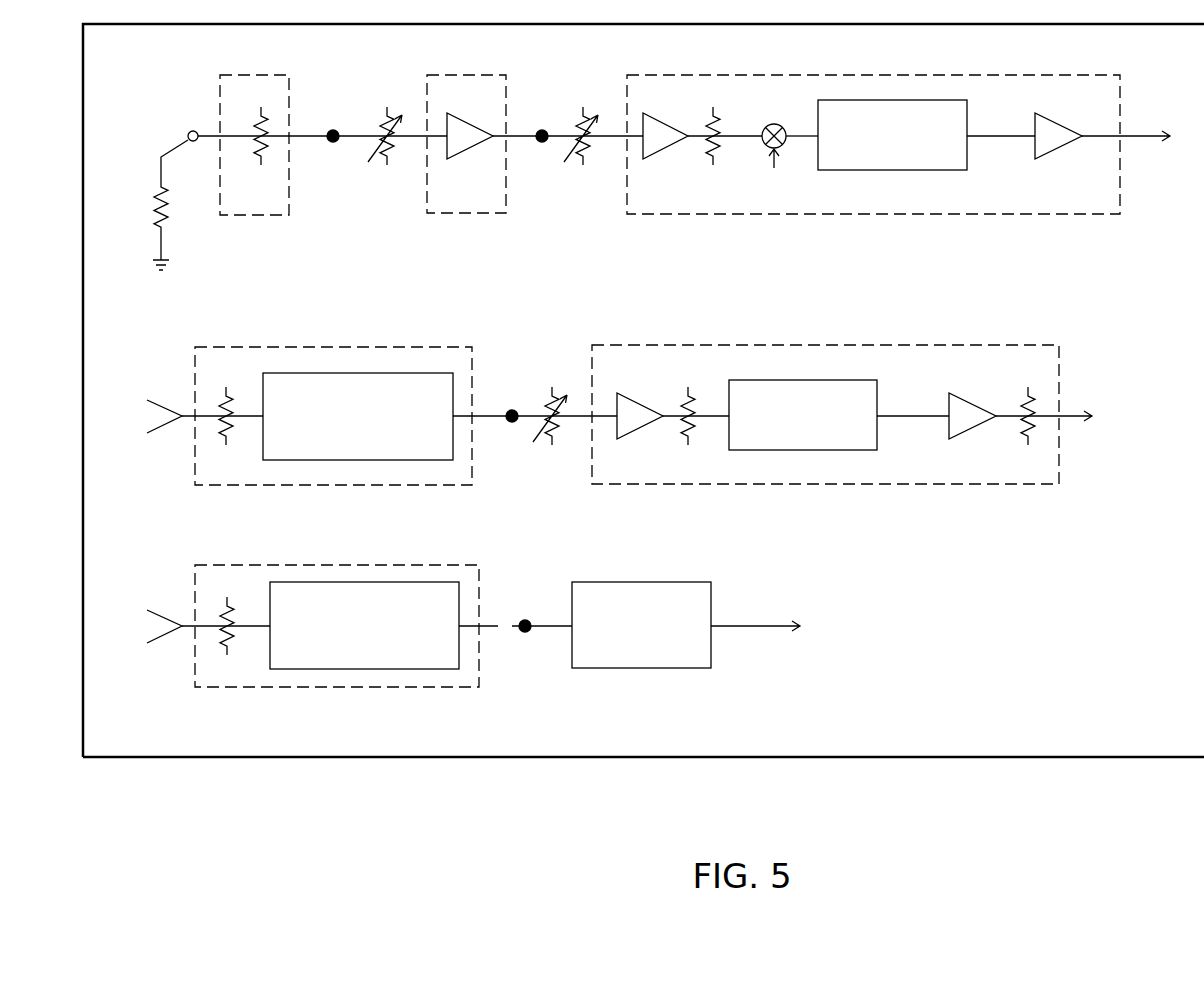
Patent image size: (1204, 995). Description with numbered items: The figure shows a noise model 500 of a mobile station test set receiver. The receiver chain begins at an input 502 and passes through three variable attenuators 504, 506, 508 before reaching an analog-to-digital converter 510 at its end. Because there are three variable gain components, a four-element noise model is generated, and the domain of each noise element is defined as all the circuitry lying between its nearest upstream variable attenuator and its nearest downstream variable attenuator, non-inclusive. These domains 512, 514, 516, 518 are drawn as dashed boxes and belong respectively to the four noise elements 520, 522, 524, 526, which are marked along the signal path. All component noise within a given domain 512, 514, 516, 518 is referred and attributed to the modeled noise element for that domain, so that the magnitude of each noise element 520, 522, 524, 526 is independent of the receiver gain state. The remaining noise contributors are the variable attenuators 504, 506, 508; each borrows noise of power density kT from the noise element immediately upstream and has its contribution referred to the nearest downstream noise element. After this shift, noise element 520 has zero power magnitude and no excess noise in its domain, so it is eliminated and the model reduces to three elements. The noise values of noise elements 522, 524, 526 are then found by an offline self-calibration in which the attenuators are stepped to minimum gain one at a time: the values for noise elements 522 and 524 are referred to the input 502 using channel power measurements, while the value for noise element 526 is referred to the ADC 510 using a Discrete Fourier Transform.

The noise model 500 is at (1013, 757).
The input 502 is at (193, 130).
The variable attenuator 504 is at (382, 107).
The variable attenuator 506 is at (578, 102).
The variable attenuator 508 is at (552, 378).
The analog-to-digital converter 510 is at (641, 625).
The domain 512 is at (258, 217).
The domain 514 is at (468, 215).
The domain 516 is at (832, 217).
The domain 518 is at (942, 485).
The noise element 520 is at (338, 154).
The noise element 522 is at (547, 155).
The noise element 524 is at (517, 431).
The noise element 526 is at (530, 647).